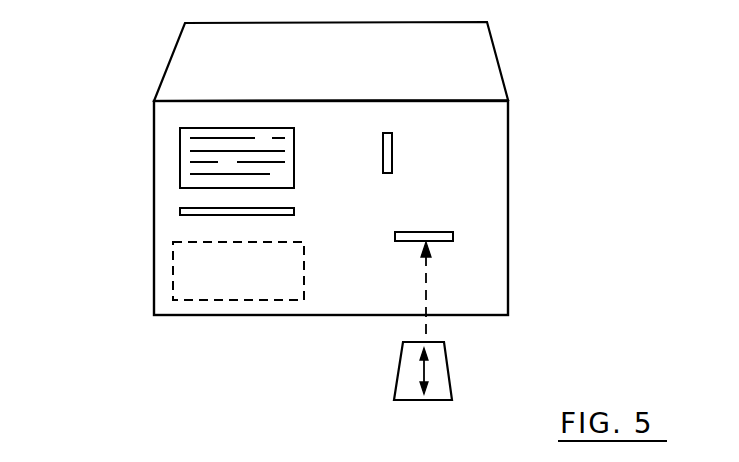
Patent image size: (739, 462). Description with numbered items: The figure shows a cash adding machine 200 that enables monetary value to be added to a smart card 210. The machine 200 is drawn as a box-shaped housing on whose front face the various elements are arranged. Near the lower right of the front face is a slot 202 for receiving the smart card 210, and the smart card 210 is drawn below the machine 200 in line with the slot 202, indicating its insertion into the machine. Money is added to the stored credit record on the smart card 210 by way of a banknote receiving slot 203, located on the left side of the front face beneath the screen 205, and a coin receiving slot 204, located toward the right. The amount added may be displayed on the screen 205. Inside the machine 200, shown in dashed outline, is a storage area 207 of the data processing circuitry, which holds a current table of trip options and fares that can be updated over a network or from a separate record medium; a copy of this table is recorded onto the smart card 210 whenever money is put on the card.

The cash adding machine 200 is at (158, 65).
The slot 202 is at (453, 236).
The banknote receiving slot 203 is at (180, 212).
The coin receiving slot 204 is at (392, 162).
The screen 205 is at (180, 150).
The storage area 207 is at (173, 272).
The smart card 210 is at (396, 380).